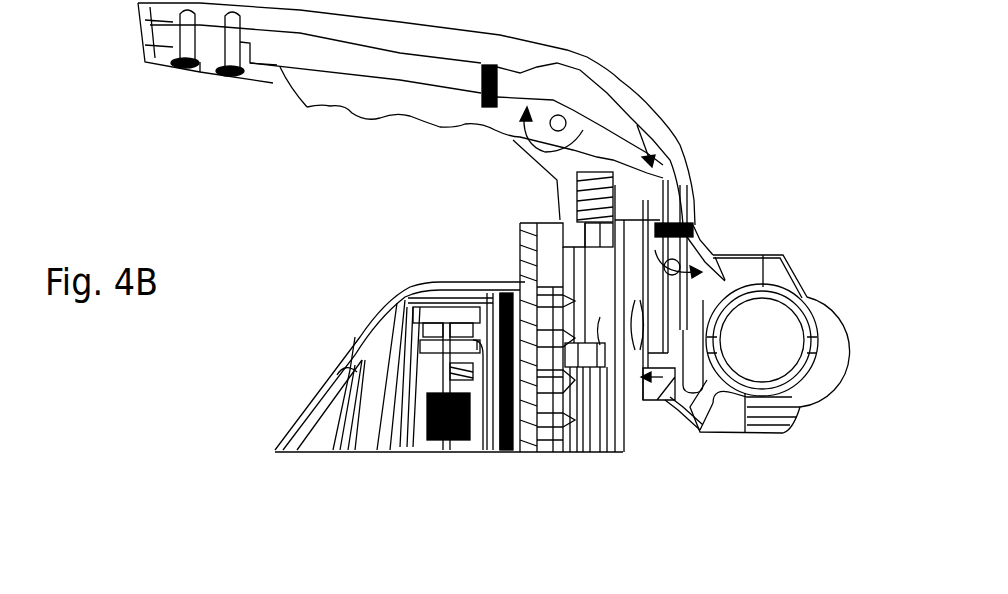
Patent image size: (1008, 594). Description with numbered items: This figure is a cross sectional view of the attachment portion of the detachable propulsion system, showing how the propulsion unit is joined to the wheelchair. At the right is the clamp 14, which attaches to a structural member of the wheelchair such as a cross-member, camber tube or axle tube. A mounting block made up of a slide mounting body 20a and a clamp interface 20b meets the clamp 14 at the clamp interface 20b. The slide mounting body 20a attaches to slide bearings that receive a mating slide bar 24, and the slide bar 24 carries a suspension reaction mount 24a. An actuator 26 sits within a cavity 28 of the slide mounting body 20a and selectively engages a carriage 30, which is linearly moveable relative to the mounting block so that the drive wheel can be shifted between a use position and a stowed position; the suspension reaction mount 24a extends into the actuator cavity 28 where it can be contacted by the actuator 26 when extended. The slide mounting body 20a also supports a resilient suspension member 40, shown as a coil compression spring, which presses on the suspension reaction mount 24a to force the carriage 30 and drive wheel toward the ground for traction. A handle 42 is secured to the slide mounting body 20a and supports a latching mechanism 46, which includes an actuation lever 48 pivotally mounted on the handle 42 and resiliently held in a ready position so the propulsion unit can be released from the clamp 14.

The clamp 14 is at (828, 262).
The slide mounting body 20a is at (620, 443).
The clamp interface 20b is at (707, 248).
The slide bar 24 is at (522, 268).
The suspension reaction mount 24a is at (557, 218).
The actuator 26 is at (583, 440).
The cavity 28 is at (600, 317).
The carriage 30 is at (515, 452).
The resilient suspension member 40 is at (576, 188).
The handle 42 is at (188, 108).
The latching mechanism 46 is at (427, 161).
The actuation lever 48 is at (303, 108).